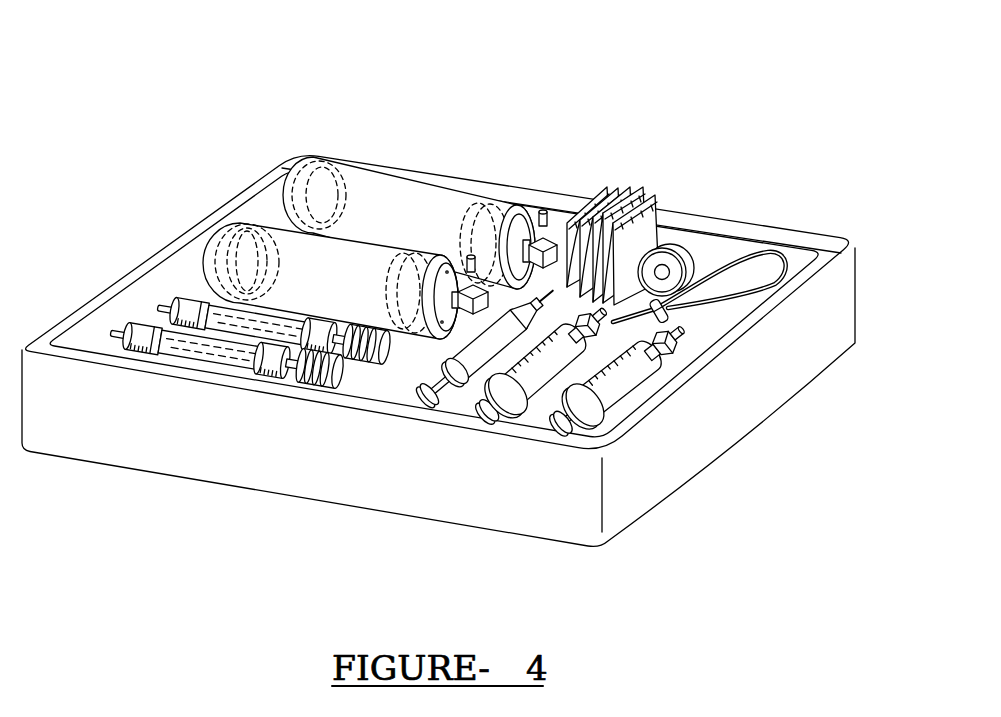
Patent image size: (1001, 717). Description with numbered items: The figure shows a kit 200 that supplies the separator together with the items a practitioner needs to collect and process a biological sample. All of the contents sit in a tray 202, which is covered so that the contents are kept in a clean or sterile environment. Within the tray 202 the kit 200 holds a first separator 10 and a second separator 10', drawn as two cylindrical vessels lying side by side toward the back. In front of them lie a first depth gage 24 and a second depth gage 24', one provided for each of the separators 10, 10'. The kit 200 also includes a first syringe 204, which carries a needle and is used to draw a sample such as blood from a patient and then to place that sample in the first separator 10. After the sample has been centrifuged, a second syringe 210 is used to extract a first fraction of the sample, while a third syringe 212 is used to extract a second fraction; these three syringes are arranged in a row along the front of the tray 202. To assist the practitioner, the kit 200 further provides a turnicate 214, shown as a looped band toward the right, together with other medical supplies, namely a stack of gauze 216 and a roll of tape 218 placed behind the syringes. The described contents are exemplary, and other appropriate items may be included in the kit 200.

The kit 200 is at (308, 61).
The tray 202 is at (172, 244).
The first separator 10 is at (320, 247).
The second separator 10' is at (387, 200).
The first depth gage 24 is at (202, 425).
The second depth gage 24' is at (273, 406).
The first syringe 204 is at (420, 402).
The second syringe 210 is at (483, 407).
The third syringe 212 is at (562, 422).
The turnicate 214 is at (790, 232).
The gauze 216 is at (637, 189).
The tape 218 is at (691, 247).